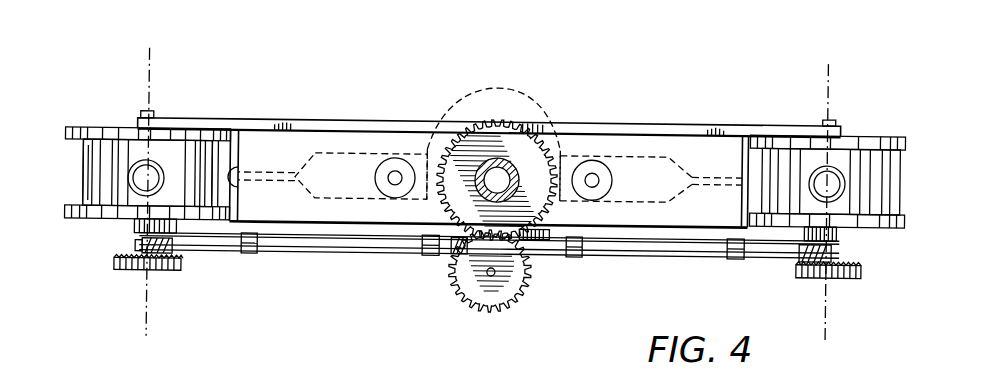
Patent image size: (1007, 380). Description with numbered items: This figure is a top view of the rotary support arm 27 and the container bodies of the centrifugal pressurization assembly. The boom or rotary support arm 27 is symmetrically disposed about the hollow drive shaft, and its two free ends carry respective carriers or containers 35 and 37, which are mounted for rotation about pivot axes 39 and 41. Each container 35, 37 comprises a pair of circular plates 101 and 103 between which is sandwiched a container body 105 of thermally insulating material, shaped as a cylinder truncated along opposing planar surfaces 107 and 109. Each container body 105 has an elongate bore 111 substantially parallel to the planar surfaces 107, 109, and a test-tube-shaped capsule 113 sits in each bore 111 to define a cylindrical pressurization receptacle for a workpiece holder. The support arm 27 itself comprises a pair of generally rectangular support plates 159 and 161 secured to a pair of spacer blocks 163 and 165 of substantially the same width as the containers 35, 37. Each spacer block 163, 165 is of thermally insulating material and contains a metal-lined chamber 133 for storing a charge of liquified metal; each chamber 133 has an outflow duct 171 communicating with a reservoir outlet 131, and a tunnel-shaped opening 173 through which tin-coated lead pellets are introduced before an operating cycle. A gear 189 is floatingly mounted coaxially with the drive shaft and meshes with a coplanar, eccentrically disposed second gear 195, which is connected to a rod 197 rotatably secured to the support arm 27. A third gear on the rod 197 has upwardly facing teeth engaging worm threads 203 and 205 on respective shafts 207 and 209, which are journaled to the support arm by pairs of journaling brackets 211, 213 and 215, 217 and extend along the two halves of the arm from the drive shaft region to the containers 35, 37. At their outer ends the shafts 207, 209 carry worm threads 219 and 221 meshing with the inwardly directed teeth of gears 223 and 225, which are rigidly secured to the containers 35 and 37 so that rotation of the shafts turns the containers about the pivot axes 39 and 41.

The rotary support arm 27 is at (320, 117).
The container 35 is at (119, 129).
The container 37 is at (858, 118).
The pivot axis 39 is at (143, 66).
The pivot axis 41 is at (827, 81).
The circular plate 101 is at (213, 134).
The circular plate 103 is at (87, 228).
The container body 105 is at (173, 149).
The planar surface 107 is at (82, 183).
The planar surface 109 is at (213, 165).
The elongate bore 111 is at (126, 183).
The capsule 113 is at (165, 183).
The reservoir outlet 131 is at (236, 186).
The metal-lined chamber 133 is at (493, 159).
The support plate 159 is at (615, 255).
The support plate 161 is at (623, 127).
The spacer block 163 is at (363, 146).
The spacer block 165 is at (688, 143).
The outflow duct 171 is at (280, 176).
The tunnel-shaped opening 173 is at (374, 180).
The gear 189 is at (548, 208).
The second gear 195 is at (493, 301).
The rod 197 is at (527, 273).
The worm thread 203 is at (456, 255).
The worm thread 205 is at (615, 230).
The shaft 207 is at (323, 255).
The shaft 209 is at (660, 255).
The journaling bracket 211 is at (248, 257).
The journaling bracket 213 is at (425, 257).
The journaling bracket 215 is at (585, 257).
The journaling bracket 217 is at (742, 257).
The worm thread 219 is at (165, 276).
The worm thread 221 is at (833, 256).
The gear 223 is at (138, 277).
The gear 225 is at (856, 276).